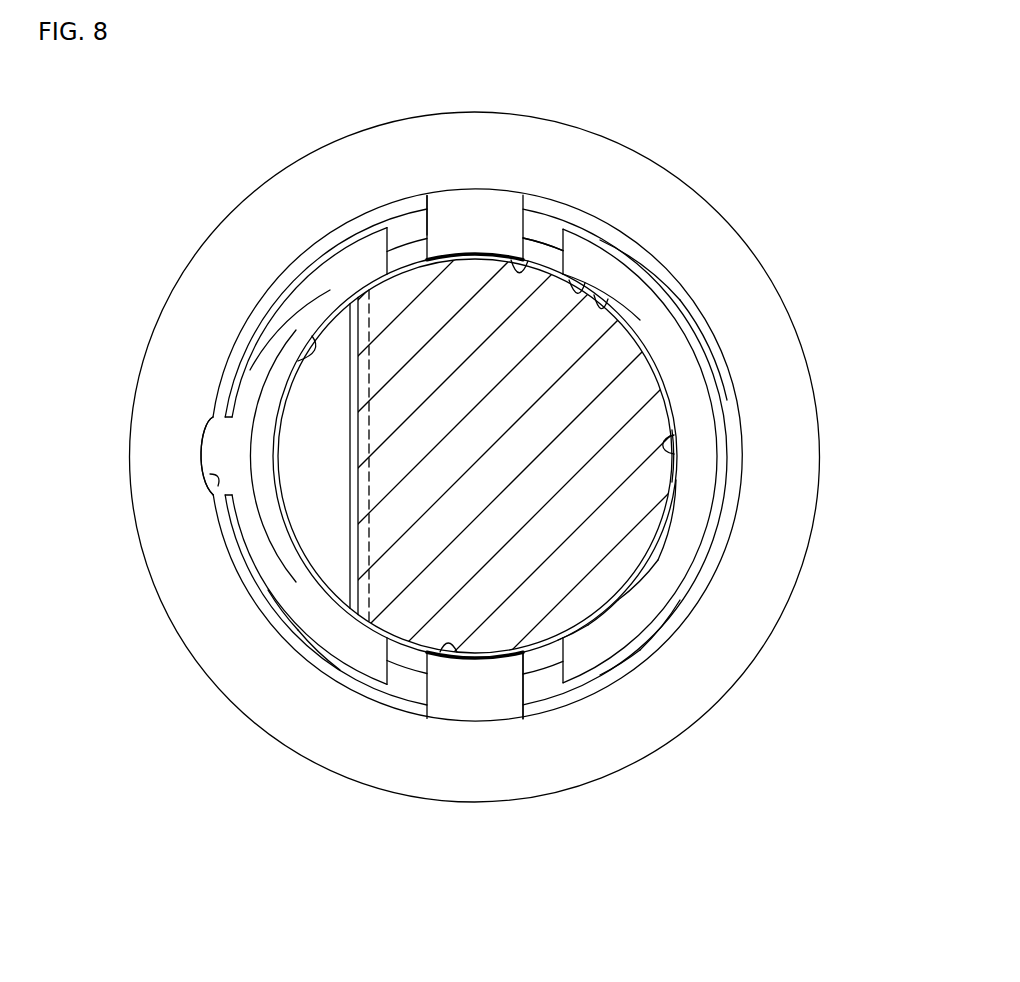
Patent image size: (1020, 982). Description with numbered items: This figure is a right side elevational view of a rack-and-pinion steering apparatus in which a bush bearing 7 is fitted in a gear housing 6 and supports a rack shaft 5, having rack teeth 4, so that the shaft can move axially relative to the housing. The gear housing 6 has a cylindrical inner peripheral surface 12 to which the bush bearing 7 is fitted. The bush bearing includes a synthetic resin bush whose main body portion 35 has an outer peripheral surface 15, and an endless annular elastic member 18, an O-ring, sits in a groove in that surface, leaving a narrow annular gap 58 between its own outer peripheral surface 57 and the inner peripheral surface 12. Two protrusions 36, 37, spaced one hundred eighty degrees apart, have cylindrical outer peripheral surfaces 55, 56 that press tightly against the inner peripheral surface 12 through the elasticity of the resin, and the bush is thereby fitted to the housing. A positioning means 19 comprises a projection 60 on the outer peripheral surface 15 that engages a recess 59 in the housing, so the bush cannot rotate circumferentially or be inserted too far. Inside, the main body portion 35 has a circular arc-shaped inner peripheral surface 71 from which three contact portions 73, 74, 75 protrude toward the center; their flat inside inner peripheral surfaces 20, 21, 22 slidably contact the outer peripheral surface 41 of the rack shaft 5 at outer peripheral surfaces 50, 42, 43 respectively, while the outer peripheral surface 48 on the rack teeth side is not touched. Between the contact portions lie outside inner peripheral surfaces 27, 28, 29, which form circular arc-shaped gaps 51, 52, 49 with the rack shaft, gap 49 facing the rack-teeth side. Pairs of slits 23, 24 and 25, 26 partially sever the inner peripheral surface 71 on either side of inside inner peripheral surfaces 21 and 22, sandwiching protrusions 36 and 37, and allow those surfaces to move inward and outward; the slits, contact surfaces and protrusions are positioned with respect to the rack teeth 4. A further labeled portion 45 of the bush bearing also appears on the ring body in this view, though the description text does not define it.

The rack teeth 4 is at (340, 491).
The rack shaft 5 is at (595, 546).
The gear housing 6 is at (297, 176).
The bush bearing 7 is at (650, 273).
The inner peripheral surface 12 is at (668, 632).
The outer peripheral surface 15 is at (232, 378).
The endless annular elastic member 18 is at (283, 616).
The positioning means 19 is at (197, 435).
The inside inner peripheral surface 20 is at (673, 444).
The inside inner peripheral surface 21 is at (548, 270).
The inside inner peripheral surface 22 is at (435, 656).
The slit 23 is at (532, 230).
The slit 24 is at (402, 232).
The slit 25 is at (540, 683).
The slit 26 is at (407, 662).
The outside inner peripheral surface 27 is at (596, 290).
The outside inner peripheral surface 28 is at (630, 590).
The outside inner peripheral surface 29 is at (348, 335).
The main body portion 35 is at (613, 638).
The protrusion 36 is at (497, 236).
The protrusion 37 is at (502, 690).
The outer peripheral surface 41 is at (640, 573).
The outer peripheral surface 42 is at (484, 256).
The outer peripheral surface 43 is at (478, 657).
The ring body 45 is at (688, 375).
The outer peripheral surface 48 is at (312, 336).
The gap 49 is at (323, 552).
The outer peripheral surface 50 is at (673, 514).
The gap 51 is at (620, 305).
The gap 52 is at (637, 582).
The outer peripheral surface 55 is at (452, 215).
The outer peripheral surface 56 is at (459, 724).
The outer peripheral surface 57 is at (717, 328).
The annular gap 58 is at (323, 665).
The recess 59 is at (213, 486).
The projection 60 is at (203, 455).
The inner peripheral surface 71 is at (612, 303).
The contact portion 73 is at (673, 459).
The contact portion 74 is at (513, 262).
The contact portion 75 is at (467, 657).